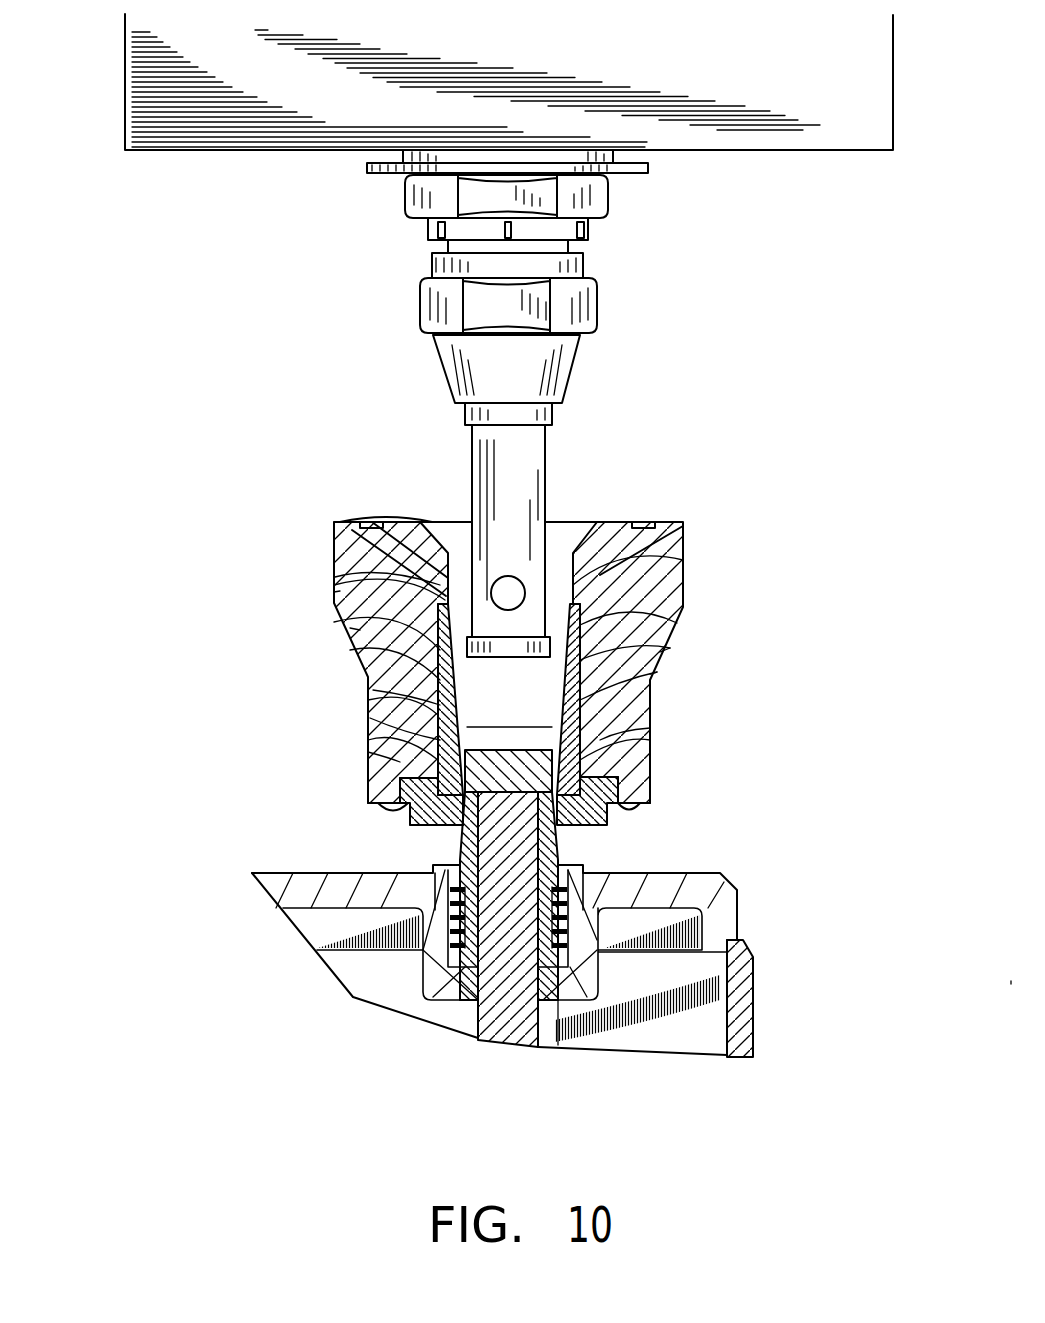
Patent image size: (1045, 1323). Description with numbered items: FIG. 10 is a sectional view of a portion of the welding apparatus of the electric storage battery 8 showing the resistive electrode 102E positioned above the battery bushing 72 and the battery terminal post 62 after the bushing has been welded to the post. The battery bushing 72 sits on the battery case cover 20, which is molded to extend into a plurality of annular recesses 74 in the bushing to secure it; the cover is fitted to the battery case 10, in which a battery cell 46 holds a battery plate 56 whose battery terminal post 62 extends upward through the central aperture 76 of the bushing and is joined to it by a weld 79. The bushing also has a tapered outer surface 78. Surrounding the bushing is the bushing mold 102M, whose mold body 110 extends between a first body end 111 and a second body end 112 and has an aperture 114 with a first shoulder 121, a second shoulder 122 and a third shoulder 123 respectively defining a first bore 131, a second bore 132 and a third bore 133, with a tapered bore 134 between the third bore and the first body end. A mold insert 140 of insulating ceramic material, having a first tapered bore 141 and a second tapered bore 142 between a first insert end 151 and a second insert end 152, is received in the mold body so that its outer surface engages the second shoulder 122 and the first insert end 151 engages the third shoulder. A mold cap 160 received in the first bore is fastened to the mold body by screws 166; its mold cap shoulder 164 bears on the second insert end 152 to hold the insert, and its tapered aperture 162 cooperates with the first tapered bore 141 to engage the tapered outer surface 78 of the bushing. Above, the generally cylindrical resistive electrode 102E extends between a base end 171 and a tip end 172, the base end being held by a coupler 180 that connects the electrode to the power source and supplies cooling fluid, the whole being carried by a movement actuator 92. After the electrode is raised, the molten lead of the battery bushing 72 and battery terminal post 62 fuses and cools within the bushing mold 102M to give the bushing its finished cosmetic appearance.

The movement actuator 92 is at (124, 88).
The coupler 180 is at (447, 385).
The base end 171 is at (547, 478).
The tip end 172 is at (683, 530).
The resistive electrode 102E is at (709, 425).
The bushing mold 102M is at (826, 557).
The tapered bore 134 is at (340, 522).
The second body end 112 is at (333, 543).
The third bore 133 is at (335, 577).
The third shoulder 123 is at (334, 592).
The aperture 114 is at (350, 628).
The second bore 132 is at (440, 655).
The second shoulder 122 is at (373, 690).
The first shoulder 121 is at (370, 718).
The first bore 131 is at (368, 752).
The first body end 111 is at (367, 772).
The mold cap shoulder 164 is at (400, 817).
The tapered aperture 162 is at (413, 828).
The second insert end 152 is at (680, 575).
The mold body 110 is at (677, 623).
The second tapered bore 142 is at (670, 648).
The mold insert 140 is at (657, 672).
The first tapered bore 141 is at (653, 697).
The first insert end 151 is at (650, 728).
The mold cap 160 is at (650, 750).
The screws 166 is at (620, 810).
The electric storage battery 8 is at (786, 777).
The battery bushing 72 is at (560, 837).
The tapered outer surface 78 is at (560, 850).
The weld 79 is at (463, 827).
The central aperture 76 is at (457, 860).
The battery terminal post 62 is at (560, 860).
The battery case cover 20 is at (727, 873).
The annular recesses 74 is at (445, 940).
The battery case 10 is at (755, 992).
The battery plate 56 is at (492, 1020).
The battery cell 46 is at (647, 1032).